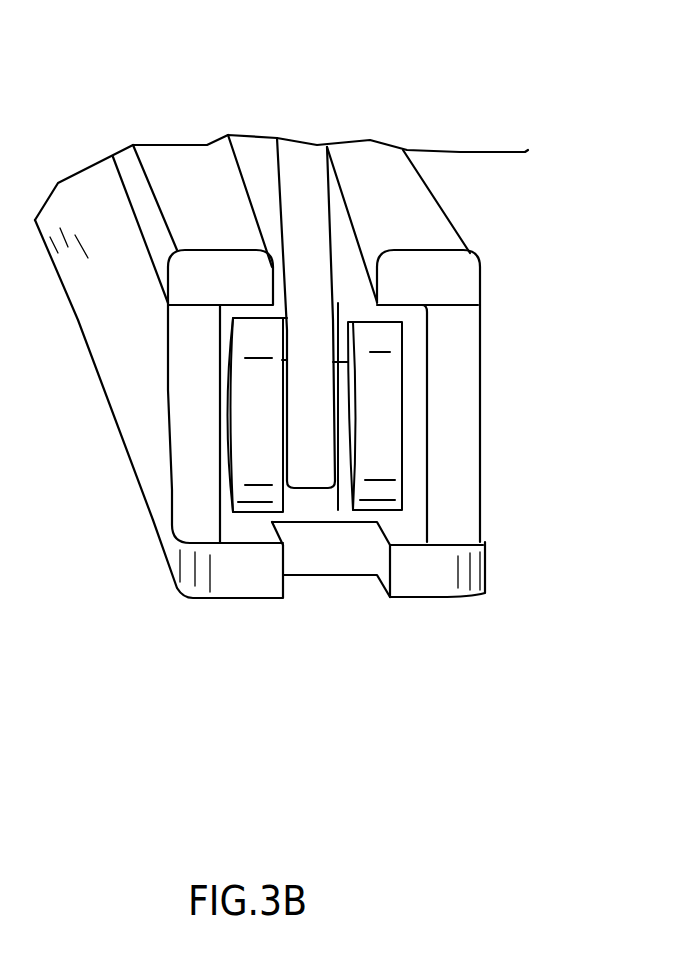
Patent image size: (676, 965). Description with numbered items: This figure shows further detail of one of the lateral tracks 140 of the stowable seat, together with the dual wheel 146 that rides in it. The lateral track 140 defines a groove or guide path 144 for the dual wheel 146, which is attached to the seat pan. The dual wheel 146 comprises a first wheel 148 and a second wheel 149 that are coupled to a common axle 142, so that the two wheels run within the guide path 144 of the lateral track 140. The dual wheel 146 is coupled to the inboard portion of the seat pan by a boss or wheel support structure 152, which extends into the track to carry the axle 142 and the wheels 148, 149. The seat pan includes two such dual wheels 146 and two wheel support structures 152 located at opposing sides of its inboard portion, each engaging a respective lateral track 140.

The lateral track 140 is at (128, 422).
The axle 142 is at (343, 470).
The guide path 144 is at (351, 290).
The dual wheel 146 is at (420, 381).
The first wheel 148 is at (375, 435).
The second wheel 149 is at (260, 475).
The wheel support structure 152 is at (307, 175).